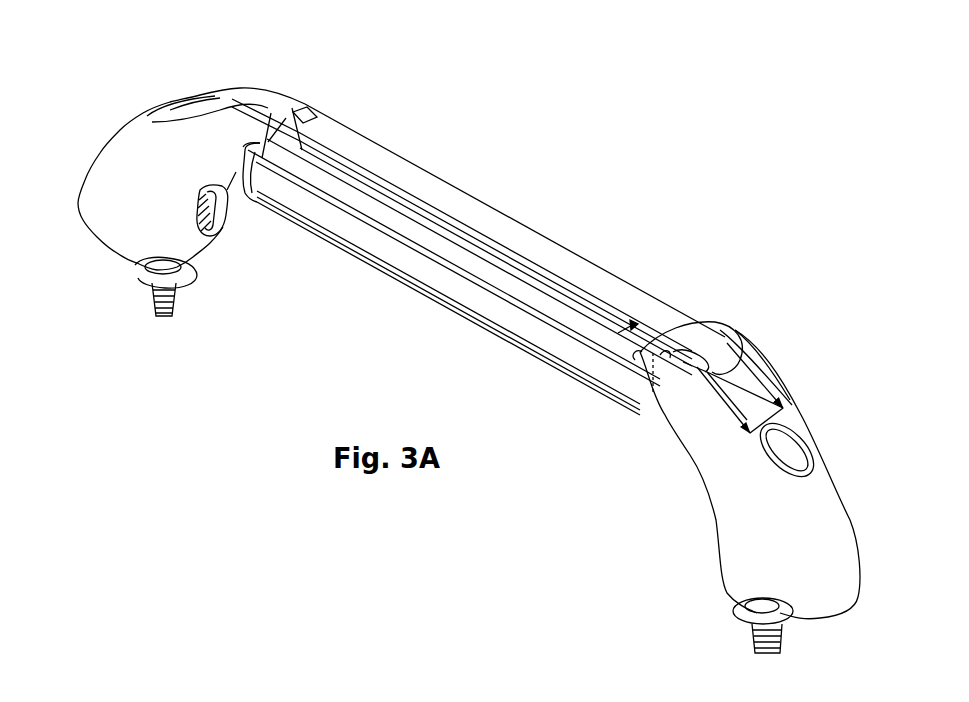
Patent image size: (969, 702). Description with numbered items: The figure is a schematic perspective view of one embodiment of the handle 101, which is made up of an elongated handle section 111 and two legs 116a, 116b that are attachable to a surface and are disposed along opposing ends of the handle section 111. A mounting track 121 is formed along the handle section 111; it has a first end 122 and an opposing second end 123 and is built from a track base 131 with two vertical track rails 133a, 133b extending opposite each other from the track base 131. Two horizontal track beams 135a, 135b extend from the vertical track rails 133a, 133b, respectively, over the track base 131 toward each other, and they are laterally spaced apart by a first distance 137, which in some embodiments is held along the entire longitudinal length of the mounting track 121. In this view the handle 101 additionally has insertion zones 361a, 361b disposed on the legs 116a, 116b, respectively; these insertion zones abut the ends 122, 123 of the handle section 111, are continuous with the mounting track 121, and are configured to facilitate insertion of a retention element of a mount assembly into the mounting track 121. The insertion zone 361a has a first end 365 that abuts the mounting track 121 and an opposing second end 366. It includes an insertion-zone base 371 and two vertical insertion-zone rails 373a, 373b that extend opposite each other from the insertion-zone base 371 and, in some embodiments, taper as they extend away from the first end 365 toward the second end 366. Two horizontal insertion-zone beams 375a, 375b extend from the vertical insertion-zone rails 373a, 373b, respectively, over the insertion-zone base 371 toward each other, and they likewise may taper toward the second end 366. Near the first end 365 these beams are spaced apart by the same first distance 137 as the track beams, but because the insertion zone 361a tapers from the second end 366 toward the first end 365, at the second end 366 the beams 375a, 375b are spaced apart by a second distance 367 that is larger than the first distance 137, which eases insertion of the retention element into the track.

The handle 101 is at (580, 133).
The handle section 111 is at (333, 268).
The leg 116a is at (838, 440).
The leg 116b is at (108, 107).
The mounting track 121 is at (427, 143).
The first end 122 is at (686, 287).
The second end 123 is at (384, 108).
The track base 131 is at (347, 177).
The vertical track rail 133a is at (472, 238).
The vertical track rail 133b is at (448, 220).
The horizontal track beam 135a is at (570, 277).
The horizontal track beam 135b is at (514, 318).
The first distance 137 is at (627, 325).
The insertion zone 361a is at (773, 349).
The insertion zone 361b is at (245, 80).
The first end 365 is at (714, 320).
The second end 366 is at (806, 378).
The second distance 367 is at (755, 437).
The insertion-zone base 371 is at (733, 395).
The vertical insertion-zone rail 373a is at (715, 360).
The vertical insertion-zone rail 373b is at (662, 360).
The horizontal insertion-zone beam 375a is at (660, 355).
The horizontal insertion-zone beam 375b is at (640, 352).